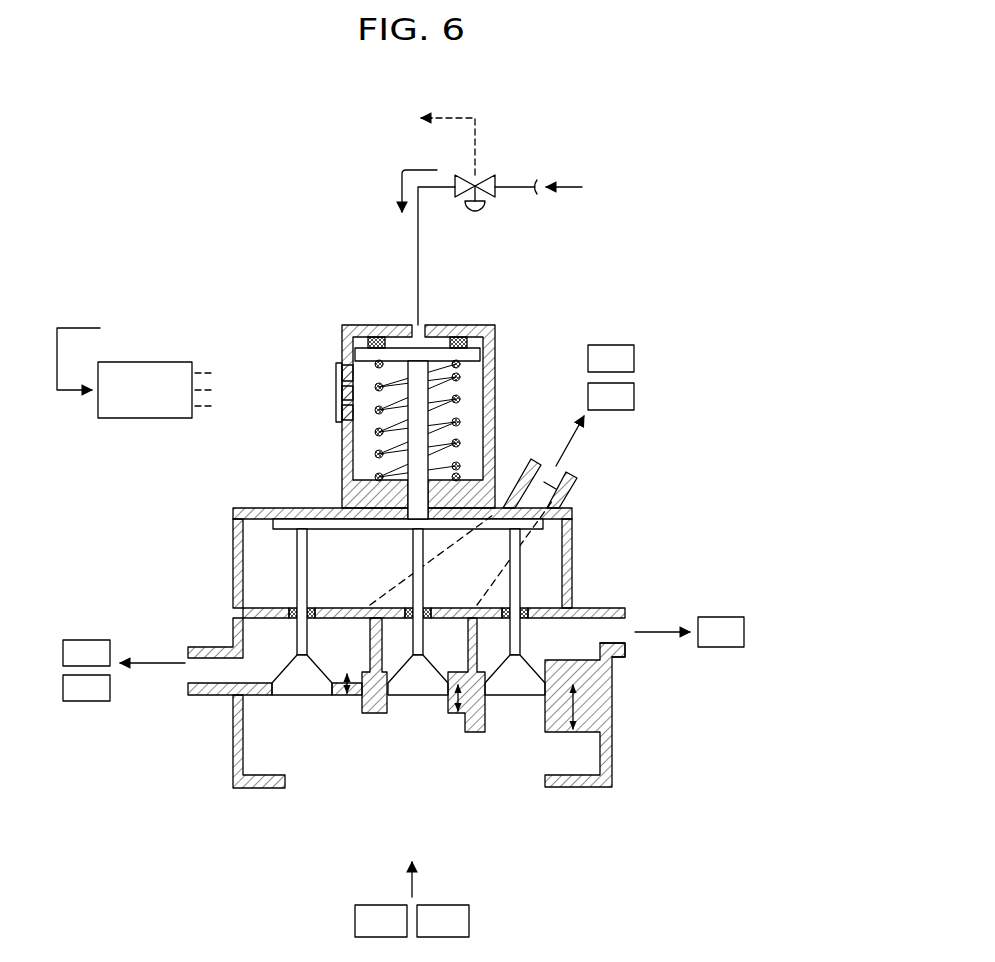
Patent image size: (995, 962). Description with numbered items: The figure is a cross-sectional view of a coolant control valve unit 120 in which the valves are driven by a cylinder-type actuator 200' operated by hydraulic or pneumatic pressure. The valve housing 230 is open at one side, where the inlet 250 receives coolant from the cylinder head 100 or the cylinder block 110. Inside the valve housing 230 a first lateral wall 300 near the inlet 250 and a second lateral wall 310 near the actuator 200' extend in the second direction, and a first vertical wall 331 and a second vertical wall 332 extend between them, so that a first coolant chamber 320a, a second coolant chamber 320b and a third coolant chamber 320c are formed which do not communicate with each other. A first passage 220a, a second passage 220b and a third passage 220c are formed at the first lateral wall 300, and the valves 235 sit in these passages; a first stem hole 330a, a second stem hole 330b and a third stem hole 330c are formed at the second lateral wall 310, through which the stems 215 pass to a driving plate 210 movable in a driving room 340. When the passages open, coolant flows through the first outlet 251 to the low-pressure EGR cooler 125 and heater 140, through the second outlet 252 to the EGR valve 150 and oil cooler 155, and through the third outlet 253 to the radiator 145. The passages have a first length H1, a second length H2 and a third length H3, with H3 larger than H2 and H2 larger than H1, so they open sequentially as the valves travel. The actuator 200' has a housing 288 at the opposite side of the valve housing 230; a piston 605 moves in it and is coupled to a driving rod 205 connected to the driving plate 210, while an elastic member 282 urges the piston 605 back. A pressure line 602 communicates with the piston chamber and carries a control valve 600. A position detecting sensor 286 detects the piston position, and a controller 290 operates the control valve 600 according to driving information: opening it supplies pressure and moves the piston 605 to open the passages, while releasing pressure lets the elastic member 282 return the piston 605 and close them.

The cylinder head 100 is at (383, 899).
The cylinder block 110 is at (443, 921).
The coolant control valve unit 120 is at (586, 562).
The low-pressure EGR cooler 125 is at (124, 653).
The heater 140 is at (86, 688).
The radiator 145 is at (689, 632).
The EGR valve 150 is at (611, 358).
The oil cooler 155 is at (595, 424).
The actuator 200' is at (435, 375).
The driving rod 205 is at (423, 416).
The driving plate 210 is at (302, 507).
The stems 215 is at (510, 548).
The first passage 220a is at (287, 694).
The second passage 220b is at (438, 697).
The third passage 220c is at (612, 661).
The valve housing 230 is at (230, 698).
The valves 235 is at (520, 697).
The inlet 250 is at (527, 790).
The first outlet 251 is at (204, 666).
The second outlet 252 is at (556, 487).
The third outlet 253 is at (609, 634).
The elastic member 282 is at (378, 386).
The position detecting sensor 286 is at (343, 393).
The housing 288 is at (499, 351).
The controller 290 is at (145, 420).
The first lateral wall 300 is at (262, 694).
The second lateral wall 310 is at (258, 608).
The first coolant chamber 320a is at (337, 688).
The second coolant chamber 320b is at (393, 663).
The third coolant chamber 320c is at (492, 663).
The first stem hole 330a is at (310, 607).
The second stem hole 330b is at (424, 607).
The third stem hole 330c is at (522, 618).
The first vertical wall 331 is at (372, 635).
The second vertical wall 332 is at (470, 637).
The driving room 340 is at (548, 540).
The control valve 600 is at (490, 162).
The hydraulic or pneumatic pressure line 602 is at (418, 254).
The piston 605 is at (361, 356).
The first length H1 is at (349, 704).
The second length H2 is at (458, 716).
The third length H3 is at (572, 735).